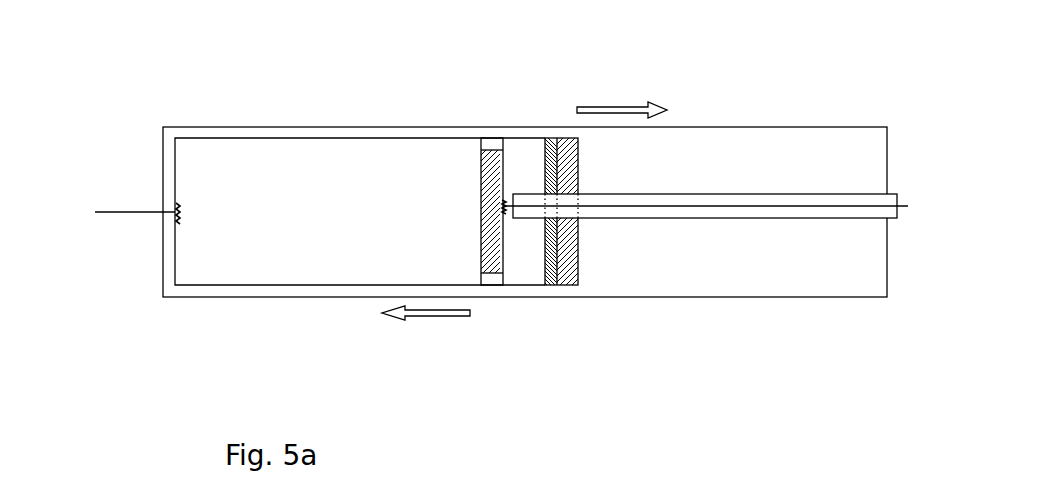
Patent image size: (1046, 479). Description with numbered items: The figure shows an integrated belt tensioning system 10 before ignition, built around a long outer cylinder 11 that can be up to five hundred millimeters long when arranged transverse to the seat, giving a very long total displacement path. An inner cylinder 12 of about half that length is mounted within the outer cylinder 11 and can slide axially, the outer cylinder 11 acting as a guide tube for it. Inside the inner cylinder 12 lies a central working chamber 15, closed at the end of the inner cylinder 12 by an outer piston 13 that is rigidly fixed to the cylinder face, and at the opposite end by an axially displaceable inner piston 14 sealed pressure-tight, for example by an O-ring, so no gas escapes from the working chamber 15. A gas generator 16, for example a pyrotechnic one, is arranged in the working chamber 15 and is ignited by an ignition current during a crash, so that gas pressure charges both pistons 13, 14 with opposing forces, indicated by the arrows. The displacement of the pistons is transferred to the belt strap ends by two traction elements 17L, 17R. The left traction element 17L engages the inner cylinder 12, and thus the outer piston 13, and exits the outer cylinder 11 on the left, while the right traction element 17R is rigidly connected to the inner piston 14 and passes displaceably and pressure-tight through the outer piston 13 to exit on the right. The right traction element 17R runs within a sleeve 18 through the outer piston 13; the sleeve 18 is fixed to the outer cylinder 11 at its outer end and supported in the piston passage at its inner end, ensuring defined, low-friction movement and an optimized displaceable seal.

The integrated belt tensioning system 10 is at (480, 72).
The outer cylinder 11 is at (735, 127).
The inner cylinder 12 is at (270, 138).
The outer piston 13 is at (598, 238).
The inner piston 14 is at (485, 263).
The working chamber 15 is at (518, 270).
The gas generator 16 is at (548, 178).
The left traction element 17L is at (108, 218).
The right traction element 17R is at (803, 204).
The sleeve 18 is at (672, 218).